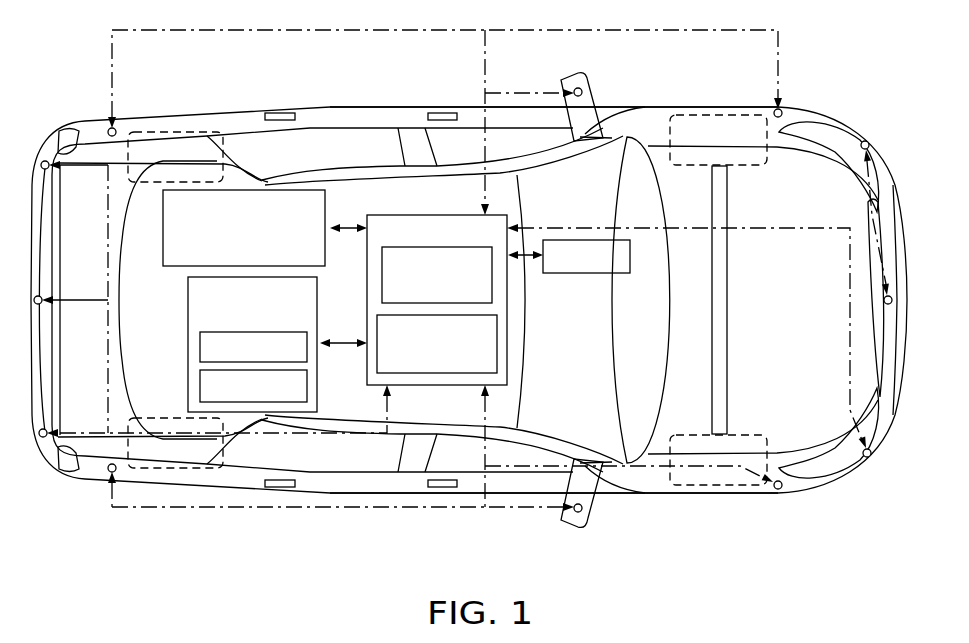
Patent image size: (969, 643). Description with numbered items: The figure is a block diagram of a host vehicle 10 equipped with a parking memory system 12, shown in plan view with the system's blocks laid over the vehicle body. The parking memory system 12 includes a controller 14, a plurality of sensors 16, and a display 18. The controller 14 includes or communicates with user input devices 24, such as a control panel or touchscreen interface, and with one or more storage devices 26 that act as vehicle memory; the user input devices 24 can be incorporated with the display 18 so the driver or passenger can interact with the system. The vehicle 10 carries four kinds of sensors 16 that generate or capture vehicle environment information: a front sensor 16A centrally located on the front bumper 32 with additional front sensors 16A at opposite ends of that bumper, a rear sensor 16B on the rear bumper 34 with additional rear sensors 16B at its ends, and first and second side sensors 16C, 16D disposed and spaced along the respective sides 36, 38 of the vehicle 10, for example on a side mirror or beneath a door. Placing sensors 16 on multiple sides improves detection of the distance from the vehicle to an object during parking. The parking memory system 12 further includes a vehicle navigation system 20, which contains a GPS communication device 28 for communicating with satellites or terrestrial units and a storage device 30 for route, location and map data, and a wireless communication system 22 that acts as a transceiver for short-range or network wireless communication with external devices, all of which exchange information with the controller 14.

The host vehicle 10 is at (232, 100).
The parking memory system 12 is at (914, 215).
The controller 14 is at (417, 386).
The sensor 16 is at (895, 314).
The front sensor 16A is at (868, 142).
The rear sensor 16B is at (43, 190).
The first side sensor 16C is at (108, 130).
The second side sensor 16D is at (108, 471).
The display 18 is at (631, 255).
The vehicle navigation system 20 is at (188, 312).
The wireless communication system 22 is at (163, 243).
The user input devices 24 is at (377, 357).
The storage devices 26 is at (382, 287).
The communication device 28 is at (200, 345).
The storage device 30 is at (200, 387).
The front bumper 32 is at (892, 192).
The rear bumper 34 is at (33, 182).
The first side 36 is at (670, 106).
The second side 38 is at (668, 494).